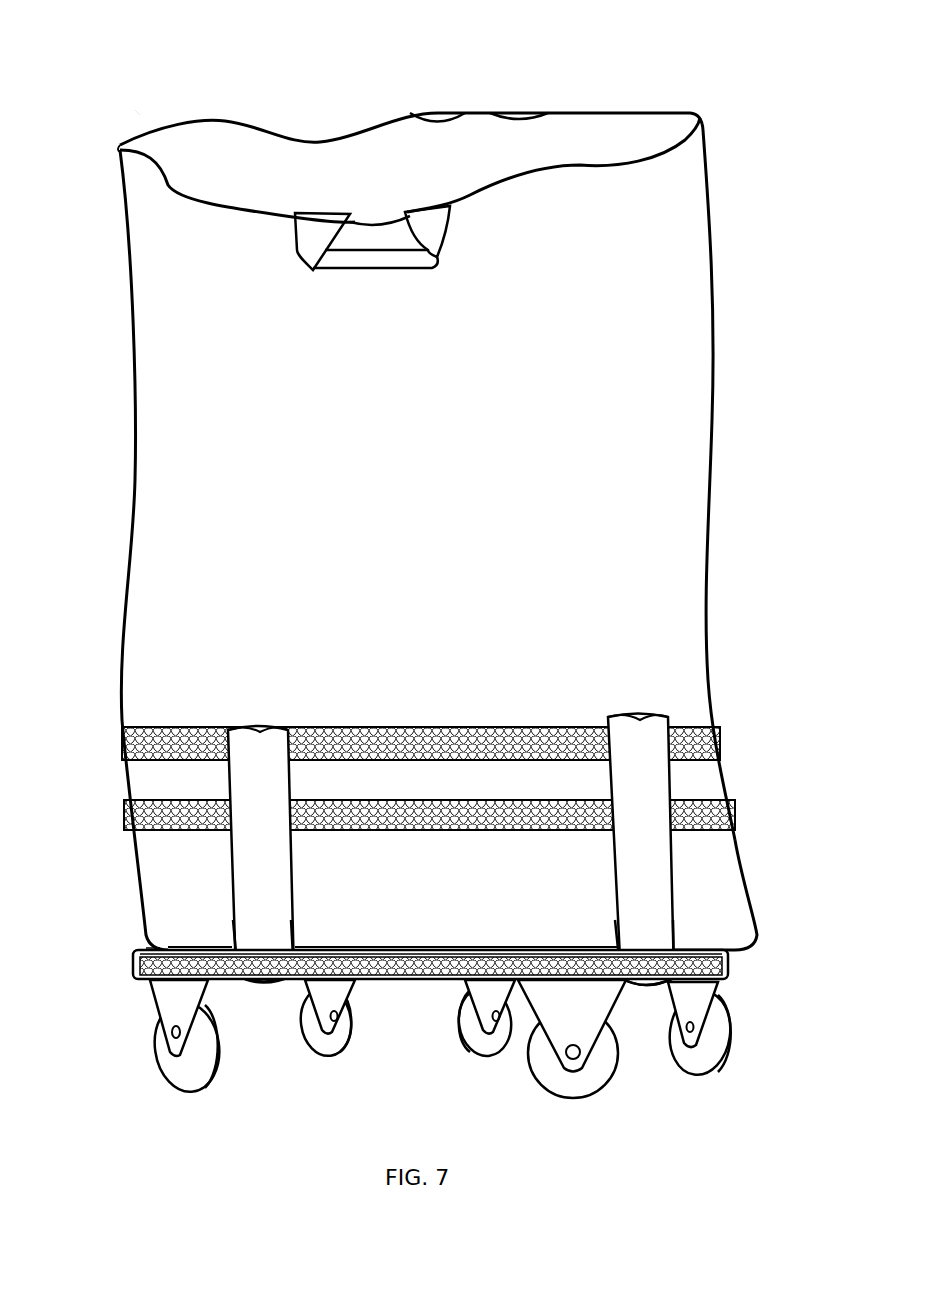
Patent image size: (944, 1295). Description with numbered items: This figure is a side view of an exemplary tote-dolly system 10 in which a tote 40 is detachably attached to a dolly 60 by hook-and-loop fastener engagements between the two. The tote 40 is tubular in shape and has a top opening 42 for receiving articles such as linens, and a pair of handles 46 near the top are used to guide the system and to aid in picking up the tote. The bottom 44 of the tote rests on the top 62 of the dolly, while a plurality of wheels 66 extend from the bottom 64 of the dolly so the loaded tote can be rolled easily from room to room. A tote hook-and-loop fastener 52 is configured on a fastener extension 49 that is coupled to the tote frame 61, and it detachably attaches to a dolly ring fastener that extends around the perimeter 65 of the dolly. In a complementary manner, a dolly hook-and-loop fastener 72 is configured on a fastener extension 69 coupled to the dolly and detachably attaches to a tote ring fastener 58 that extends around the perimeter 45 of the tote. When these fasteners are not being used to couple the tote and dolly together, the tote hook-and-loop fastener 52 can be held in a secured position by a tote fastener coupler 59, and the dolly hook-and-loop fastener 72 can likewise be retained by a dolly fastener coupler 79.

The tote-dolly system 10 is at (135, 112).
The tote 40 is at (672, 285).
The top opening 42 is at (272, 176).
The bottom 44 is at (727, 950).
The perimeter 45 is at (678, 487).
The handles 46 is at (395, 258).
The fastener extension 49 is at (244, 925).
The tote hook-and-loop fastener 52 is at (262, 982).
The tote ring fastener 58 is at (445, 745).
The tote fastener coupler 59 is at (503, 816).
The dolly 60 is at (439, 944).
The tote frame 61 is at (148, 968).
The top 62 is at (137, 940).
The bottom 64 is at (402, 985).
The perimeter 65 is at (726, 980).
The wheels 66 is at (178, 1042).
The fastener extension 69 is at (660, 922).
The dolly hook-and-loop fastener 72 is at (635, 738).
The dolly fastener coupler 79 is at (412, 950).